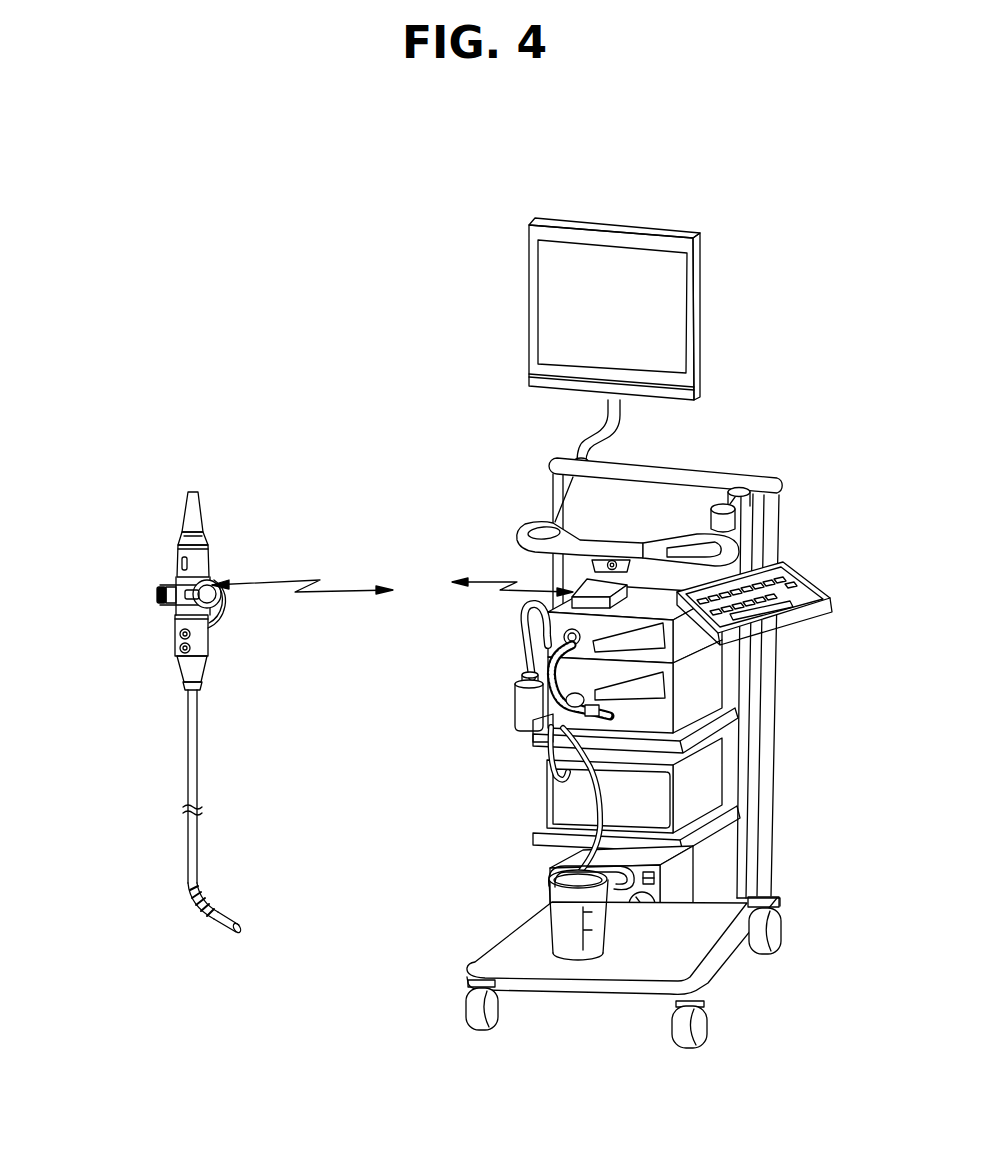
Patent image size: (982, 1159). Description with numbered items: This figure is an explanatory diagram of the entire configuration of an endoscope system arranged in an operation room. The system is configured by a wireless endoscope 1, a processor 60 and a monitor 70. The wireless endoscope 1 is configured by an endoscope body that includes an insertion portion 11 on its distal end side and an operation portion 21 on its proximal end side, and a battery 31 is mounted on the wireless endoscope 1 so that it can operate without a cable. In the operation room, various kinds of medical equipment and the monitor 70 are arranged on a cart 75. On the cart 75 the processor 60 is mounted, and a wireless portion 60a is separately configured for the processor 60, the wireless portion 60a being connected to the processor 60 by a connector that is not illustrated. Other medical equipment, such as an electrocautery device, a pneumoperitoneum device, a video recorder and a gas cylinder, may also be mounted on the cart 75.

The wireless endoscope 1 is at (242, 668).
The insertion portion 11 is at (187, 765).
The operation portion 21 is at (176, 583).
The battery 31 is at (203, 510).
The processor 60 is at (687, 640).
The wireless portion 60a is at (590, 589).
The monitor 70 is at (529, 302).
The cart 75 is at (700, 470).